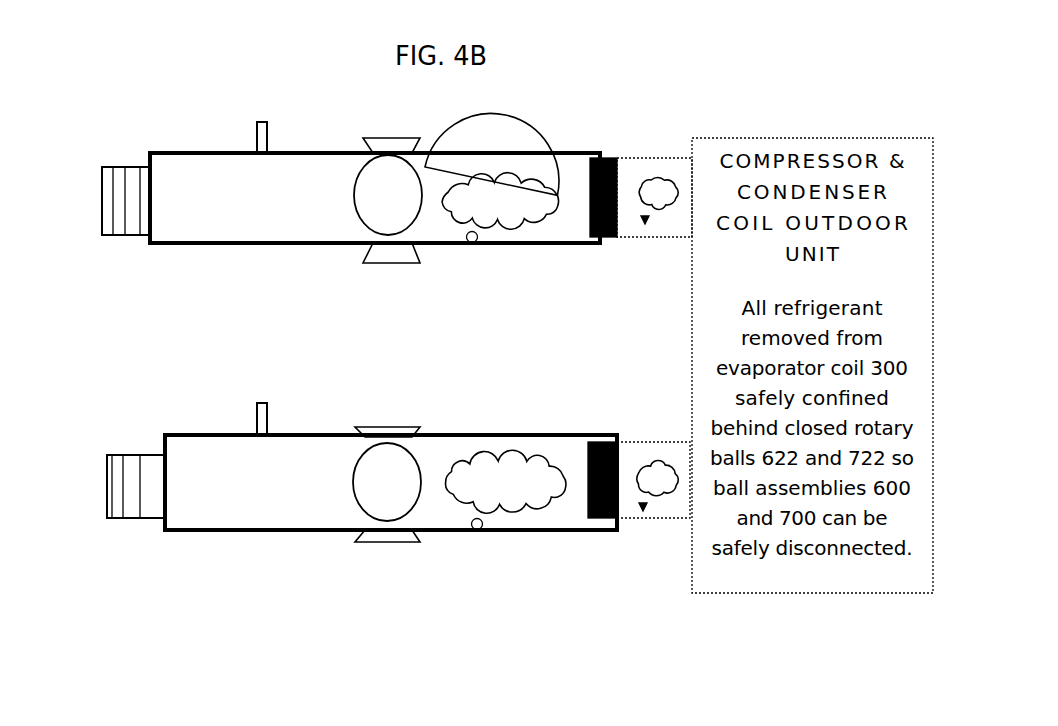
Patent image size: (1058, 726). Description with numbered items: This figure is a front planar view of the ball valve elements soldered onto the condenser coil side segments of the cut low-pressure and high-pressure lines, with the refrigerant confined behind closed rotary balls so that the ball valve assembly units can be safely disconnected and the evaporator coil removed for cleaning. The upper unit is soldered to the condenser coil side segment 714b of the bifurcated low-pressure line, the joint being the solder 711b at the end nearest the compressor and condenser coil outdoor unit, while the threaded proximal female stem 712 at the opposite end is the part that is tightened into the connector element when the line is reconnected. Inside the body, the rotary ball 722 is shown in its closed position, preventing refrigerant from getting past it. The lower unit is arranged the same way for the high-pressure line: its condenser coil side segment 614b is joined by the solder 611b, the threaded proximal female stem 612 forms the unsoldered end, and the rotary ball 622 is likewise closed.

The threaded proximal female stem 712 is at (112, 140).
The condenser coil side segment 714b is at (220, 155).
The rotary ball 722 is at (400, 201).
The solder 711b is at (630, 145).
The threaded proximal female stem 612 is at (123, 545).
The condenser coil side segment 614b is at (226, 519).
The rotary ball 622 is at (407, 459).
The solder 611b is at (608, 539).